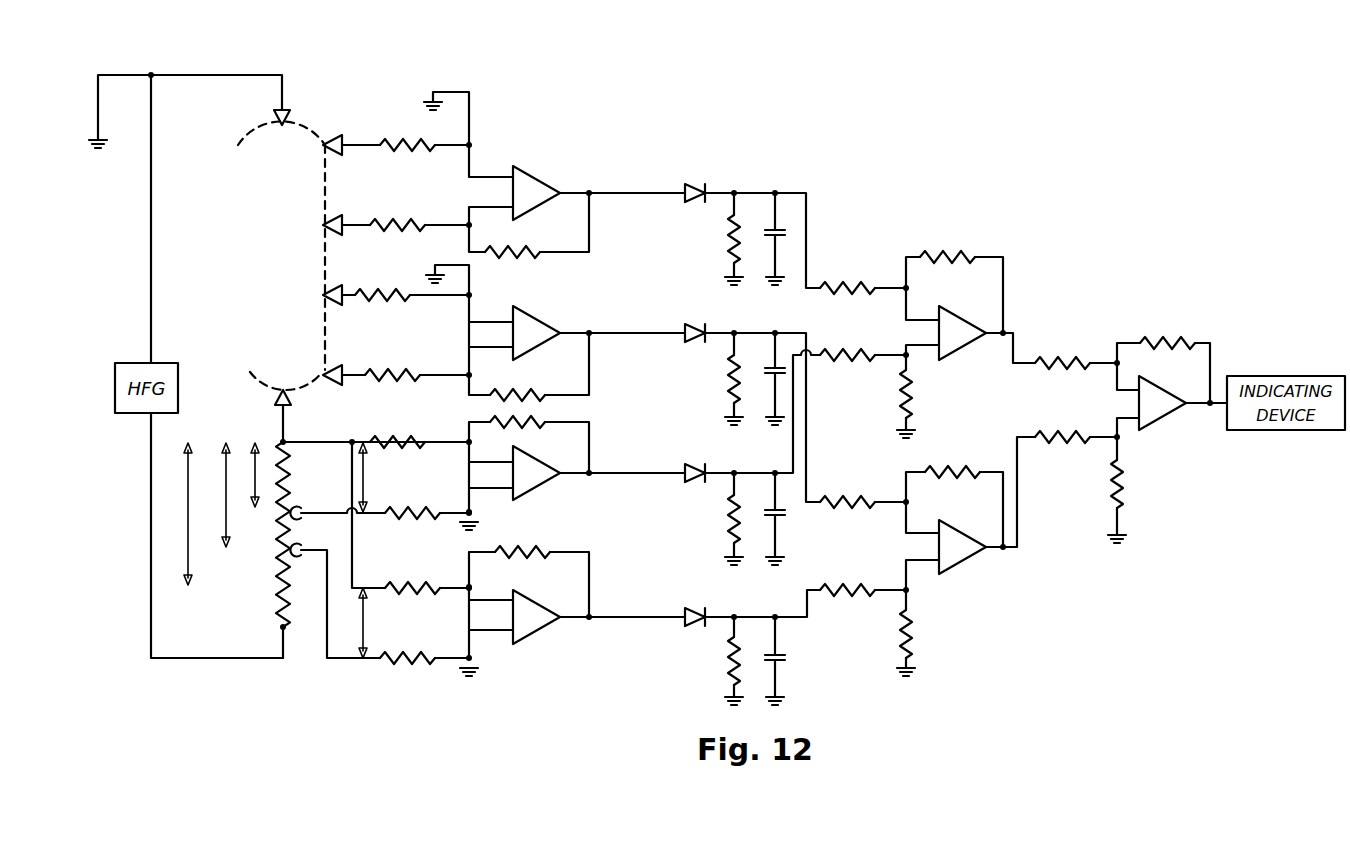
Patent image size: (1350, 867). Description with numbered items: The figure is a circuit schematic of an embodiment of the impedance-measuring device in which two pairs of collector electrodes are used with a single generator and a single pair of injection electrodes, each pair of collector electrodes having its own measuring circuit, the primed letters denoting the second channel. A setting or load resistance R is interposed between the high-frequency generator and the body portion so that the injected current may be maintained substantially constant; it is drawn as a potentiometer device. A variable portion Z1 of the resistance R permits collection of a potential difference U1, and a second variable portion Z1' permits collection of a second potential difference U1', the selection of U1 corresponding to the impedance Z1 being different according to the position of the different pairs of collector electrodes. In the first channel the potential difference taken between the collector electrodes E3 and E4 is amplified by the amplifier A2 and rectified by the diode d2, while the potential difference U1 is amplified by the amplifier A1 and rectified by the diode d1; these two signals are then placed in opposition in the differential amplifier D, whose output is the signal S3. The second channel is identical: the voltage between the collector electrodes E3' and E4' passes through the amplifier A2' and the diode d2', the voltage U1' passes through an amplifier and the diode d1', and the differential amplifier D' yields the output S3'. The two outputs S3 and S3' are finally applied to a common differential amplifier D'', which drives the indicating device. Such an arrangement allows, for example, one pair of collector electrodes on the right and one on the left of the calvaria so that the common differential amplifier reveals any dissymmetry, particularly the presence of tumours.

The collector electrode E3 is at (396, 130).
The collector electrode E4 is at (396, 213).
The collector electrode E3' is at (396, 281).
The collector electrode E4' is at (396, 393).
The amplifier A2 is at (536, 421).
The amplifier A2' is at (536, 318).
The amplifier A1 is at (530, 480).
The rectifier diode d2 is at (685, 216).
The rectifier diode d2' is at (681, 309).
The rectifier diode d1 is at (684, 451).
The rectifier diode d1' is at (682, 596).
The differential amplifier D is at (962, 315).
The differential amplifier D' is at (965, 553).
The common differential amplifier D'' is at (1167, 411).
The output signal S3 is at (1000, 355).
The output signal S3' is at (1018, 519).
The setting or load resistance R is at (186, 510).
The variable portion of resistance Z1 is at (251, 493).
The variable portion of resistance Z1' is at (212, 495).
The potential difference U1 is at (376, 477).
The potential difference U1' is at (380, 623).